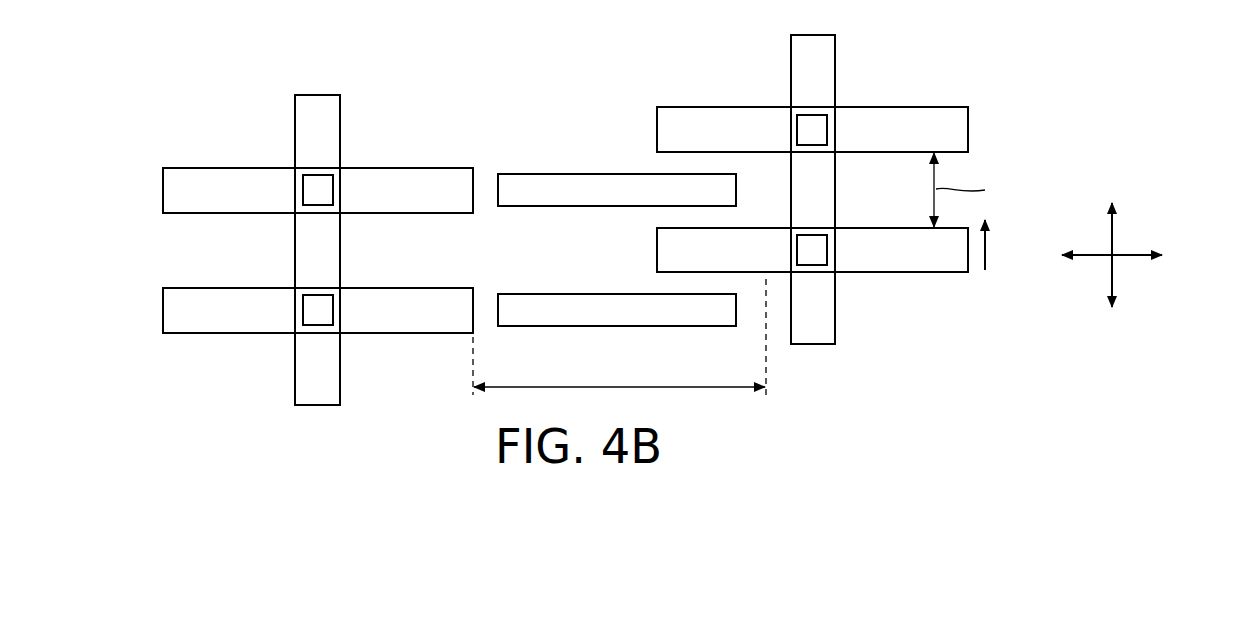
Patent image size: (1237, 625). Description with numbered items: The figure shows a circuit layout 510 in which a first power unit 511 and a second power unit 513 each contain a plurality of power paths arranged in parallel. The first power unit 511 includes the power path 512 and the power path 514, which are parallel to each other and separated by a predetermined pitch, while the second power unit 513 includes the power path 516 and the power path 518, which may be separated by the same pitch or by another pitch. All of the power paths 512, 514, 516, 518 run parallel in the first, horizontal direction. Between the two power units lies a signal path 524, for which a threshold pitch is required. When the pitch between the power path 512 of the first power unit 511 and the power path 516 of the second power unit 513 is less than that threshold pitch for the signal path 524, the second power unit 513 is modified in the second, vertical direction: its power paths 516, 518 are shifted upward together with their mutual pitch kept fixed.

The layout 510 is at (114, 129).
The first power unit 511 is at (179, 282).
The power path 512 is at (226, 177).
The second power unit 513 is at (976, 99).
The power path 514 is at (227, 324).
The power path 516 is at (903, 118).
The power path 518 is at (905, 263).
The signal path 524 is at (590, 184).